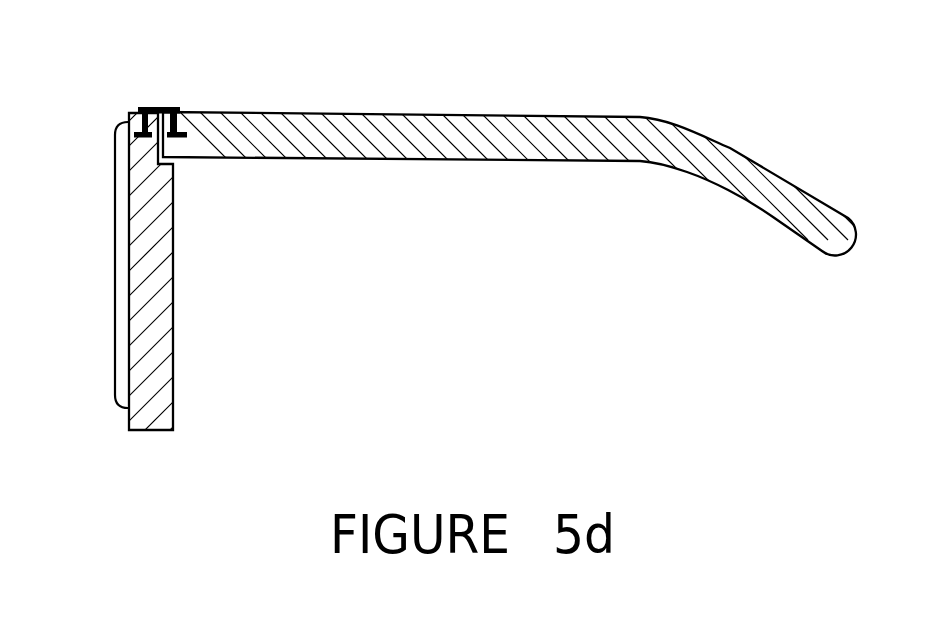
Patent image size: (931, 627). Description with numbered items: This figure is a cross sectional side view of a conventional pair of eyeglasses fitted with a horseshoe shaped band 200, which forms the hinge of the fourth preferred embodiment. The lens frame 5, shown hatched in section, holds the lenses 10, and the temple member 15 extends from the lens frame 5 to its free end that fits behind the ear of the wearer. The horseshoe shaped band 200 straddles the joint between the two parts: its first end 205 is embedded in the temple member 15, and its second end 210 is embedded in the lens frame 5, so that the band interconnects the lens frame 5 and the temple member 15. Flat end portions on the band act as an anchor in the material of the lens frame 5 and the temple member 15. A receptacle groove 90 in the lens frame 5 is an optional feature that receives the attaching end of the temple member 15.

The lens frame 5 is at (173, 292).
The lenses 10 is at (114, 320).
The temple member 15 is at (452, 115).
The receptacle groove 90 is at (152, 178).
The horseshoe shaped band 200 is at (166, 94).
The first end 205 is at (183, 125).
The second end 210 is at (135, 126).